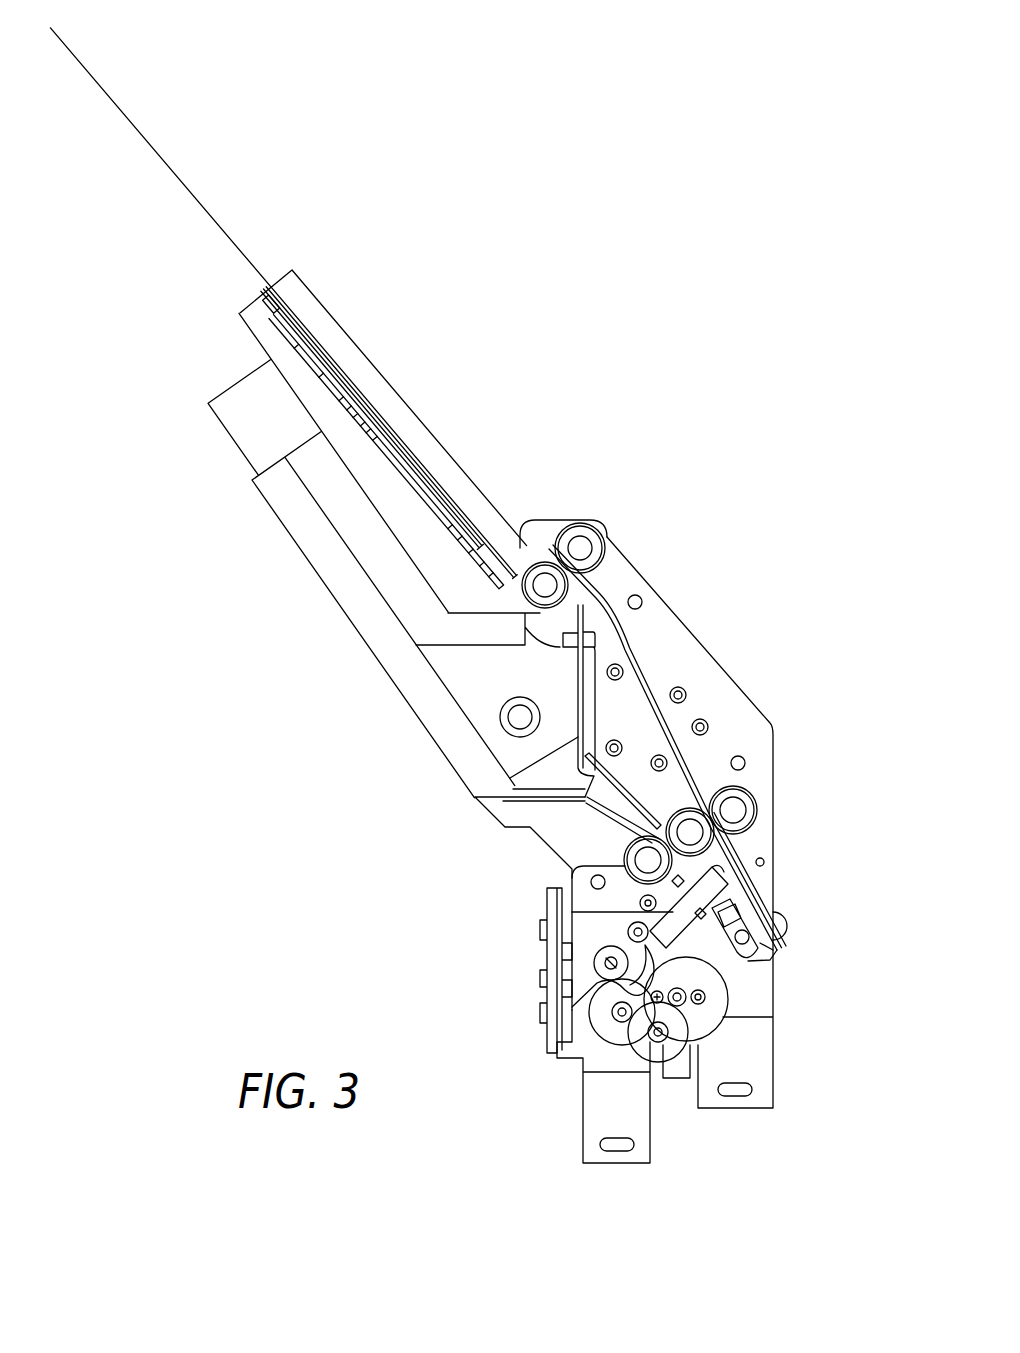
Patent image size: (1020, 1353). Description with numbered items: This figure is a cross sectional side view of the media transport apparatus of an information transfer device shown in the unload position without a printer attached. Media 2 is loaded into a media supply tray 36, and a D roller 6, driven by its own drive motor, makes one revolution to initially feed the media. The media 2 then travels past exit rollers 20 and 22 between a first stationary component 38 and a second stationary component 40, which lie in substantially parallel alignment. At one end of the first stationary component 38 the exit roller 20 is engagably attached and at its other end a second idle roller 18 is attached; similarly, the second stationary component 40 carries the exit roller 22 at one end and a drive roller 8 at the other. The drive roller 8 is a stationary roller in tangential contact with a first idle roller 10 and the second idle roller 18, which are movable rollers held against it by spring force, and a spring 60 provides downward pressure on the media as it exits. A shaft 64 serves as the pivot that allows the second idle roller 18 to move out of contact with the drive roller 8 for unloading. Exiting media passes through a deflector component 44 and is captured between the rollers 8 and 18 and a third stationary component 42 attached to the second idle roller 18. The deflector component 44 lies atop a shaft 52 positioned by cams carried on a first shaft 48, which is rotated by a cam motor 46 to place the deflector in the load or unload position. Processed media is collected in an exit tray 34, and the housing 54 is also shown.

The media 2 is at (182, 192).
The exit tray 34 is at (356, 357).
The media supply tray 36 is at (282, 524).
The spring 60 is at (550, 537).
The exit roller 20 is at (597, 548).
The exit roller 22 is at (553, 584).
The second stationary component 40 is at (628, 673).
The first stationary component 38 is at (668, 718).
The D roller 6 is at (505, 723).
The second idle roller 18 is at (757, 808).
The first idle roller 10 is at (627, 866).
The shaft 64 is at (764, 862).
The drive roller 8 is at (747, 893).
The third stationary component 42 is at (772, 922).
The deflector component 44 is at (768, 952).
The housing 54 is at (580, 928).
The first shaft 48 is at (610, 962).
The shaft 52 is at (728, 900).
The cam motor 46 is at (690, 1012).